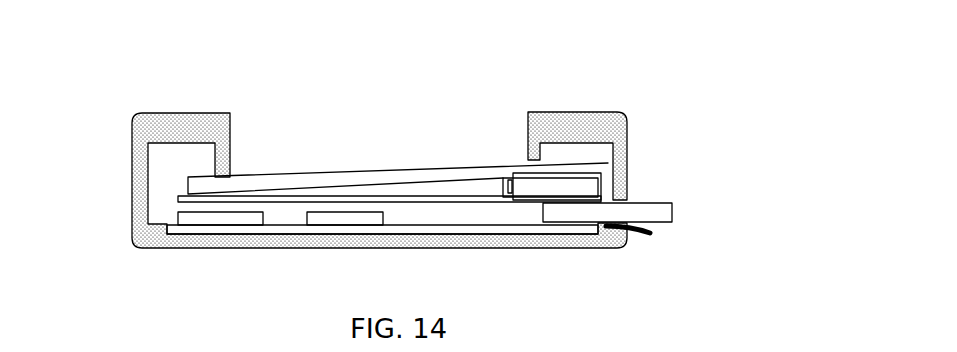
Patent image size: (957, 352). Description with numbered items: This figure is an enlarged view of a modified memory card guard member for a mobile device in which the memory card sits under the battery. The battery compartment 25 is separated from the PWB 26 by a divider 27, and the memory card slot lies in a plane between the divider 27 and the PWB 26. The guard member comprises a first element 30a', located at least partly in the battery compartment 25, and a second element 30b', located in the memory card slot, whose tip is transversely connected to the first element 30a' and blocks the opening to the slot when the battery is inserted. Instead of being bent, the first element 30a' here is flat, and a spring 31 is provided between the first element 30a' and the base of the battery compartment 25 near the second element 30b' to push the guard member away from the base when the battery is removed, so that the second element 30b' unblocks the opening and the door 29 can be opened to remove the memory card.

The battery compartment 25 is at (336, 146).
The PWB 26 is at (233, 273).
The divider 27 is at (267, 197).
The first element 30a' is at (398, 121).
The second element 30b' is at (674, 168).
The spring 31 is at (511, 194).
The door 29 is at (645, 236).